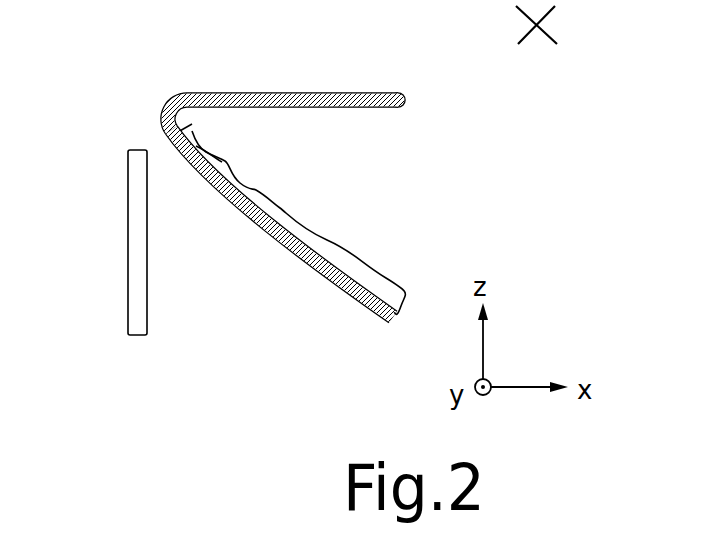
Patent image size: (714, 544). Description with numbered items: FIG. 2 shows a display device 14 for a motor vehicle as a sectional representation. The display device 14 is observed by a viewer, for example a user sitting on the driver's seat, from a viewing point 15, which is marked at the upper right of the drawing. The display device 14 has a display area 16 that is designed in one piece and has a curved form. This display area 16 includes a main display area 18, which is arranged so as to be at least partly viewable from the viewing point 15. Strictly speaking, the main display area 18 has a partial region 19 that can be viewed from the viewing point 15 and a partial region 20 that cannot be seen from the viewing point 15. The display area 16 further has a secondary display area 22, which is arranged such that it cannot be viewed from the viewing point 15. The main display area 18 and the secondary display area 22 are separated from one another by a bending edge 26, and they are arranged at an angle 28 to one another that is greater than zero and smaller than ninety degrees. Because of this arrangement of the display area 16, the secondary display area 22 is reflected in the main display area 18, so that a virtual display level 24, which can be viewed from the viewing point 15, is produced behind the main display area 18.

The display device 14 is at (122, 96).
The viewing point 15 is at (516, 25).
The display area 16 is at (380, 130).
The main display area 18 is at (327, 278).
The partial region 19 is at (331, 242).
The partial region 20 is at (203, 165).
The secondary display area 22 is at (320, 108).
The virtual display level 24 is at (128, 240).
The bending edge 26 is at (172, 125).
The angle 28 is at (188, 121).